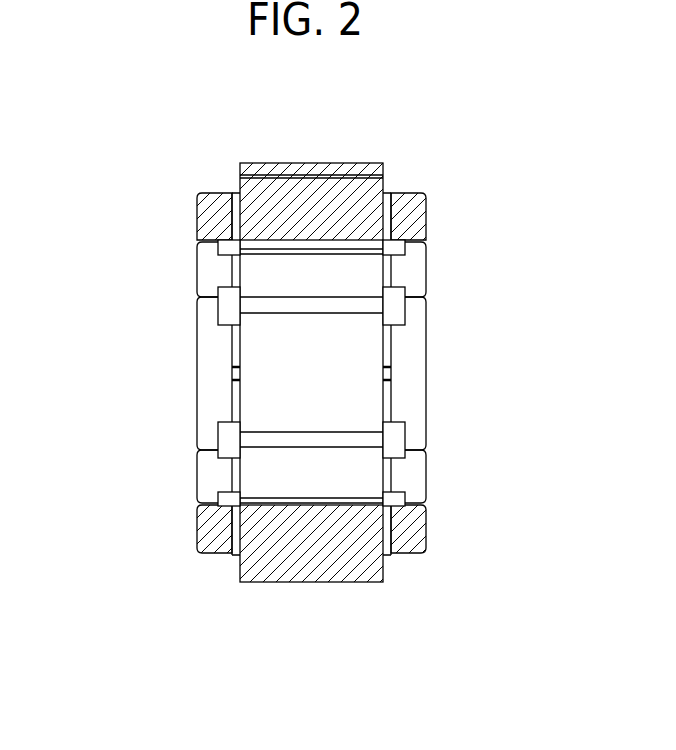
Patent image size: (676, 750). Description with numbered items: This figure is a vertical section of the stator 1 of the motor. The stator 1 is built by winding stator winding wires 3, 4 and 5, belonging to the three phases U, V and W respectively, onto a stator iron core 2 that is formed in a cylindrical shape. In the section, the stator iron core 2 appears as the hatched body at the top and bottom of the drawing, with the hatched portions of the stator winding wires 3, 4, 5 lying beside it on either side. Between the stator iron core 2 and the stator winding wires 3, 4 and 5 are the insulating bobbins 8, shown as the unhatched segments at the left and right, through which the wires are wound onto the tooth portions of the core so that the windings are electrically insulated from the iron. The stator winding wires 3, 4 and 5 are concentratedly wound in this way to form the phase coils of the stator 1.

The stator 1 is at (291, 140).
The stator iron core 2 is at (325, 582).
The stator winding wire 3 is at (313, 373).
The stator winding wire 4 is at (313, 373).
The stator winding wire 5 is at (207, 215).
The insulating bobbin 8 is at (413, 380).